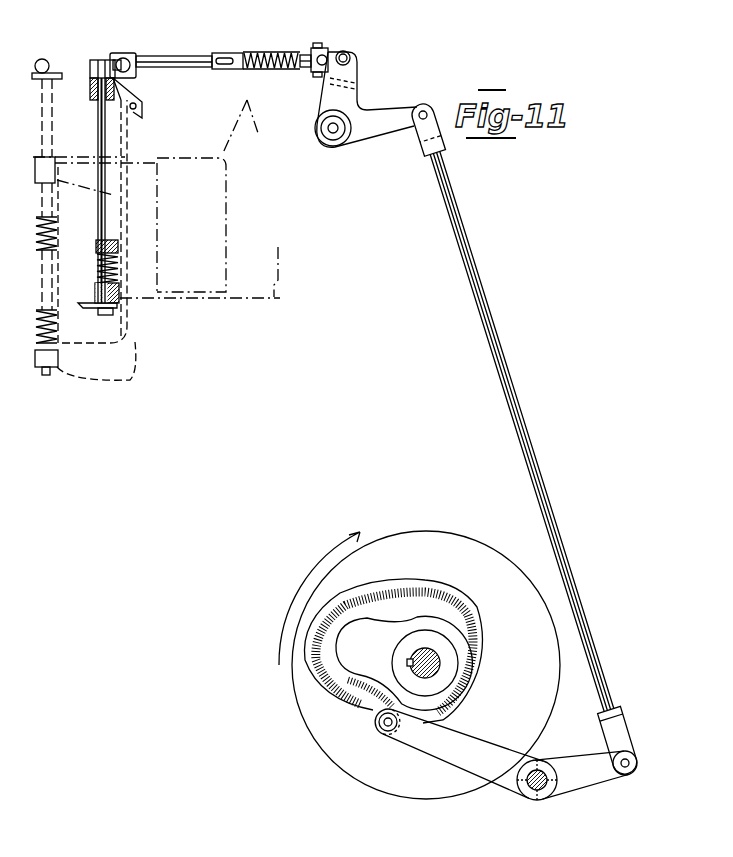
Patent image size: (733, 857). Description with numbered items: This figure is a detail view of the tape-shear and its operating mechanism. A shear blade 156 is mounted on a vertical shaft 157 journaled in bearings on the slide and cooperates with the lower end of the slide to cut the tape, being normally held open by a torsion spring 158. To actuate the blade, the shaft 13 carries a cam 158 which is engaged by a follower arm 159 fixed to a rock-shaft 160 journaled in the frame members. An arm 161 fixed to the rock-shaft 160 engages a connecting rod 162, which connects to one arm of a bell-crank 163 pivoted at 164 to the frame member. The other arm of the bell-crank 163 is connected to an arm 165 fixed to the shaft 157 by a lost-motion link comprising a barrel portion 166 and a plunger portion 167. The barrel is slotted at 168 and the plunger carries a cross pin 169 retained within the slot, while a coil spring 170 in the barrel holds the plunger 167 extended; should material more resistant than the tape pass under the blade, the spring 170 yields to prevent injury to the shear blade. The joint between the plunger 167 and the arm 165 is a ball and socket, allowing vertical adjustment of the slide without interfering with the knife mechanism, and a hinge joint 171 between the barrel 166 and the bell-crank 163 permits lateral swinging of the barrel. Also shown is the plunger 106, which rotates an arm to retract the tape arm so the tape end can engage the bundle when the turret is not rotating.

The shaft 13 is at (414, 654).
The plunger 106 is at (49, 122).
The shear blade 156 is at (88, 308).
The vertical shaft 157 is at (98, 206).
The cam 158 is at (116, 258).
The follower arm 159 is at (447, 753).
The rock-shaft 160 is at (538, 798).
The arm 161 is at (600, 774).
The connecting rod 162 is at (523, 422).
The bell-crank 163 is at (372, 108).
The pivot 164 is at (331, 148).
The arm 165 is at (113, 40).
The barrel portion 166 is at (222, 53).
The plunger portion 167 is at (203, 40).
The slot 168 is at (246, 66).
The cross pin 169 is at (222, 65).
The coil spring 170 is at (299, 68).
The hinge joint 171 is at (318, 46).